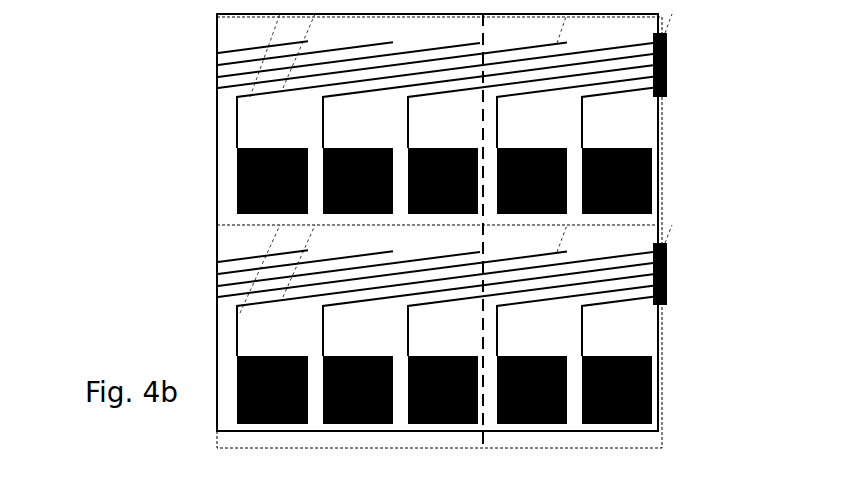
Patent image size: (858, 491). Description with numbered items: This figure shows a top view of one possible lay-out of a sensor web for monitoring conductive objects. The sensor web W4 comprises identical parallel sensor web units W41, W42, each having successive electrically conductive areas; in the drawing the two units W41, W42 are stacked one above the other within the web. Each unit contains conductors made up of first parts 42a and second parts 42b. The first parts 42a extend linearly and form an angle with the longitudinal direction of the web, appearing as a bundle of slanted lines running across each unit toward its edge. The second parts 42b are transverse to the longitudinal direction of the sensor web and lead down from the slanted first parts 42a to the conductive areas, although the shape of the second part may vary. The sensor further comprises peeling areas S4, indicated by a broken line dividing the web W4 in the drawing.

The first parts of conductors 42a is at (217, 95).
The second parts of conductors 42b is at (236, 128).
The sensor web unit W42 is at (458, 114).
The sensor web unit W41 is at (662, 368).
The sensor web W4 is at (461, 231).
The peeling areas S4 is at (483, 335).